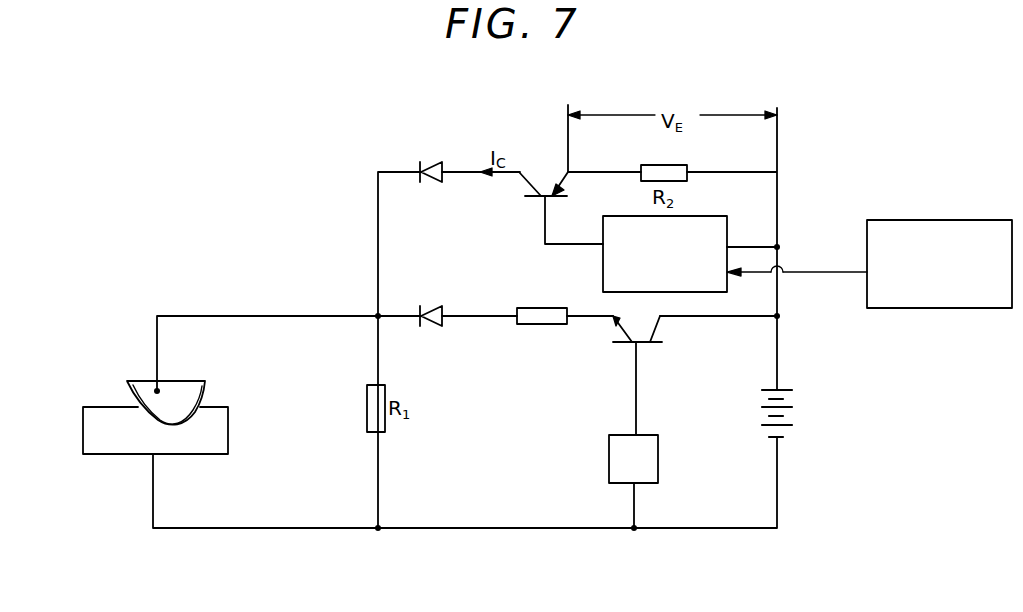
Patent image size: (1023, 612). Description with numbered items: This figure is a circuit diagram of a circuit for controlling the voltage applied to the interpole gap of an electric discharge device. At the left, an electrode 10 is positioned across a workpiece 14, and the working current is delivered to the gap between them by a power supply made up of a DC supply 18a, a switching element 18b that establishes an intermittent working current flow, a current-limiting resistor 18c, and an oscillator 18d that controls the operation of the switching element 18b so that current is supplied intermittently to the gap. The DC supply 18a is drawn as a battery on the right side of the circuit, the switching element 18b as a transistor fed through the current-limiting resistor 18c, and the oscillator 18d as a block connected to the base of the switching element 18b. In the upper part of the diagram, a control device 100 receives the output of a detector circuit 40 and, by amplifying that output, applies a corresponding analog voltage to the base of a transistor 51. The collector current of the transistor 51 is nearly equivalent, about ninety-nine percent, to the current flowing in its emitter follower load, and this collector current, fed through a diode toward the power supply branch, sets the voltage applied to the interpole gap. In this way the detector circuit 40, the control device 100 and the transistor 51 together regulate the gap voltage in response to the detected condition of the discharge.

The electrode 10 is at (183, 381).
The workpiece 14 is at (230, 437).
The DC supply 18a is at (792, 418).
The switching element 18b is at (628, 345).
The current-limiting resistor 18c is at (540, 324).
The oscillator 18d is at (609, 455).
The detector circuit 40 is at (980, 220).
The transistor 51 is at (541, 182).
The control device 100 is at (603, 263).